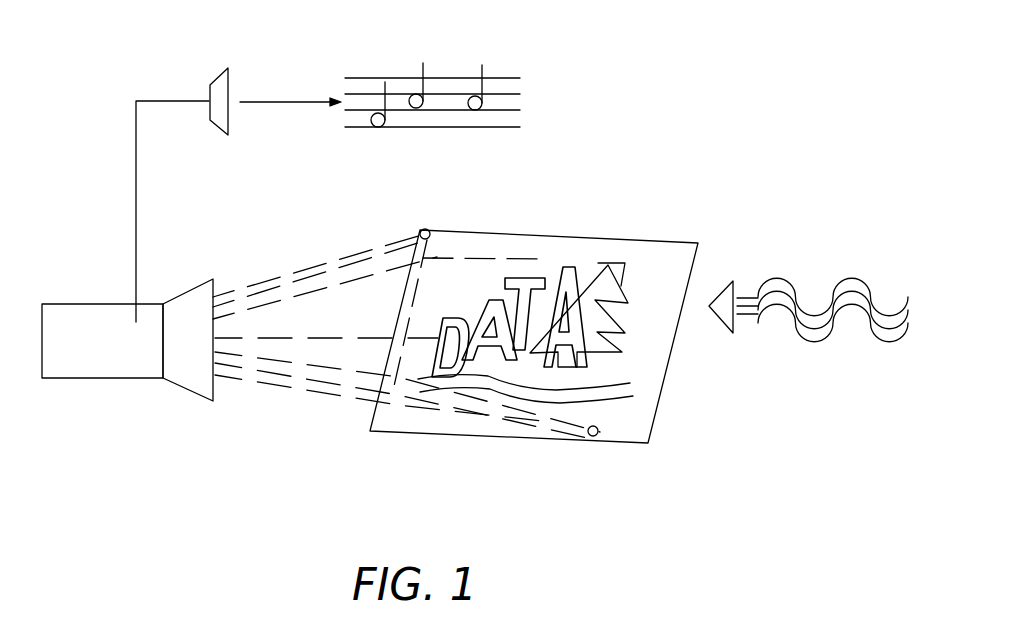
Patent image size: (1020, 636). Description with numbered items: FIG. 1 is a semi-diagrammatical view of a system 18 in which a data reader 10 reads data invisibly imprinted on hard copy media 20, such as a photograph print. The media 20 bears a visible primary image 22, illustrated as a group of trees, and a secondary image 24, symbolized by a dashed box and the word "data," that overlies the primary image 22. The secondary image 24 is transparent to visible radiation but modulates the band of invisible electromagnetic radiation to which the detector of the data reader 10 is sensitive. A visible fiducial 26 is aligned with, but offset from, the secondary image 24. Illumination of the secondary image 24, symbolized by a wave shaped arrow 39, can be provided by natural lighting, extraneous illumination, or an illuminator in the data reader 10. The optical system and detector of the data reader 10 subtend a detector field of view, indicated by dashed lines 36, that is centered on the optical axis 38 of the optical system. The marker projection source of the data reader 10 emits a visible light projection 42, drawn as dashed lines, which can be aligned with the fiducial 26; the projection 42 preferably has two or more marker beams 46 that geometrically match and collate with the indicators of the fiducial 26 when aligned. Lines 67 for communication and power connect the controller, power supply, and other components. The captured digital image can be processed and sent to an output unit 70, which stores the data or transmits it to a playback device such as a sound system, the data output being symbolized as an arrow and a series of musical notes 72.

The data reader 10 is at (145, 378).
The system 18 is at (495, 354).
The media 20 is at (668, 388).
The primary image 22 is at (587, 363).
The secondary image 24 is at (531, 278).
The fiducial 26 is at (427, 231).
The dashed lines 36 is at (326, 362).
The optical axis 38 is at (277, 378).
The wave shaped arrow 39 is at (853, 280).
The visible light projection 42 is at (406, 325).
The marker beams 46 is at (238, 292).
The lines 67 is at (136, 199).
The output unit 70 is at (220, 88).
The musical notes 72 is at (452, 62).